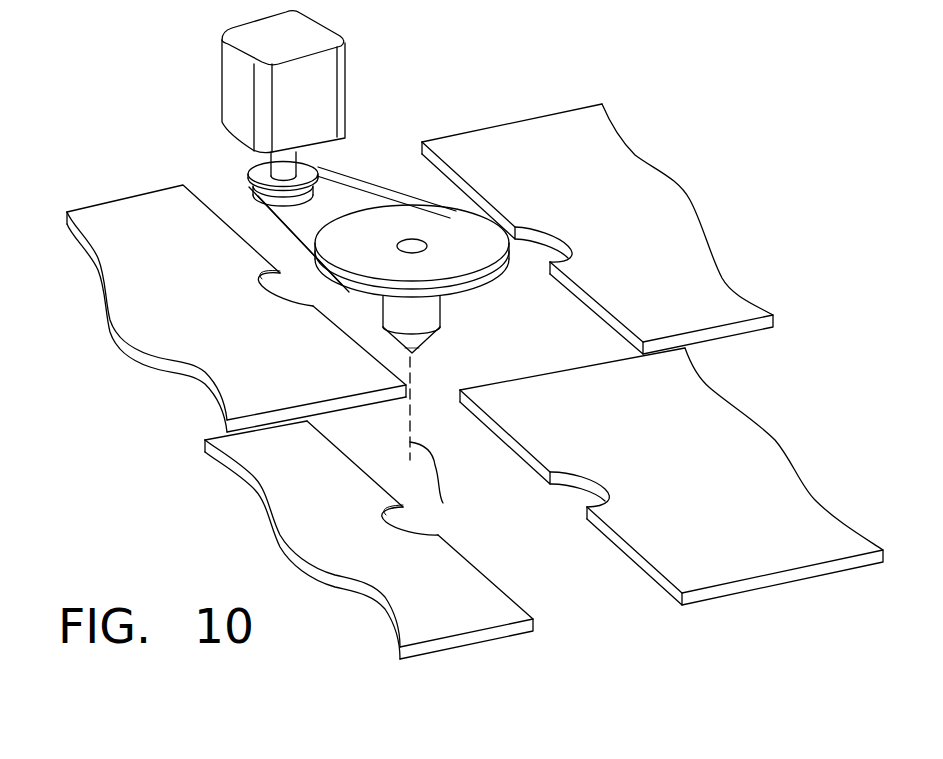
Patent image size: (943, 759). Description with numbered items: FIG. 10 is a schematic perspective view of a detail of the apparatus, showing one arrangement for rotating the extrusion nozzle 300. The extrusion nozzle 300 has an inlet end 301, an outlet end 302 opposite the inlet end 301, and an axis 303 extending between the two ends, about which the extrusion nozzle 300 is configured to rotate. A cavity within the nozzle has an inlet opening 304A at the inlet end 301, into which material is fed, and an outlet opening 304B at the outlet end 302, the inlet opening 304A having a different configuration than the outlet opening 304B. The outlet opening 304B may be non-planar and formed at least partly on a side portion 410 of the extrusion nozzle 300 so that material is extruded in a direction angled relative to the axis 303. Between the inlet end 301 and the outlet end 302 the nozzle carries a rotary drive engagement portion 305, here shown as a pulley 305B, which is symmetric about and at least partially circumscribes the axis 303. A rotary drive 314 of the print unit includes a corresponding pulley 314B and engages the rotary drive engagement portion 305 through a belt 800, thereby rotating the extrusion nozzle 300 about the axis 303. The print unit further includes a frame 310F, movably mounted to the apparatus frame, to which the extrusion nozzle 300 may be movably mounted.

The extrusion nozzle 300 is at (463, 178).
The inlet end 301 is at (445, 201).
The outlet end 302 is at (397, 350).
The axis 303 is at (443, 503).
The inlet opening 304A is at (432, 243).
The outlet opening 304B is at (412, 355).
The rotary drive engagement portion 305 is at (597, 229).
The pulley 305B is at (503, 280).
The frame 310F is at (245, 378).
The rotary drive 314 is at (293, 47).
The pulley 314B is at (252, 172).
The side portion 410 is at (417, 322).
The belt 800 is at (297, 238).